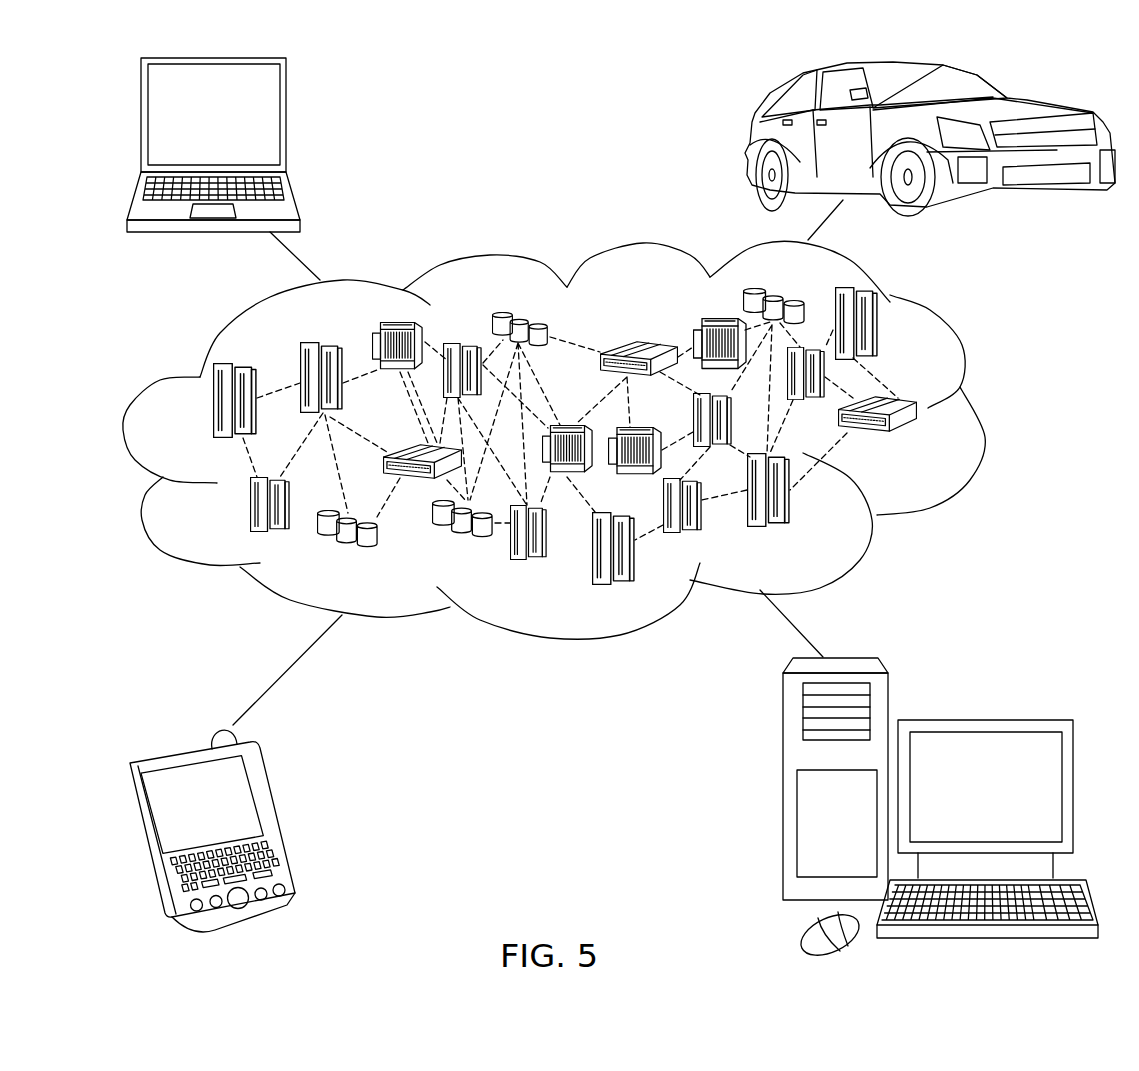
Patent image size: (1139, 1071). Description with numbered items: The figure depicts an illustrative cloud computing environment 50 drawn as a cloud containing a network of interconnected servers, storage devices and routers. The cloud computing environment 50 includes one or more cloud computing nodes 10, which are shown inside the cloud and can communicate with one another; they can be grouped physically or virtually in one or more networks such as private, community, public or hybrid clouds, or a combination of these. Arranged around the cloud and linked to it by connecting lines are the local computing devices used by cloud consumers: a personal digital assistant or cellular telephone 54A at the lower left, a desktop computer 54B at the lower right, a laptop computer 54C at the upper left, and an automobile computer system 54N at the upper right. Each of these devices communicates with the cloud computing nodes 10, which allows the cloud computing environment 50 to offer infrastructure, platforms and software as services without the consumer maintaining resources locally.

The cloud computing nodes 10 is at (927, 446).
The cloud computing environment 50 is at (987, 412).
The personal digital assistant (PDA) or cellular telephone 54A is at (273, 818).
The desktop computer 54B is at (982, 720).
The laptop computer 54C is at (287, 120).
The automobile computer system 54N is at (750, 140).